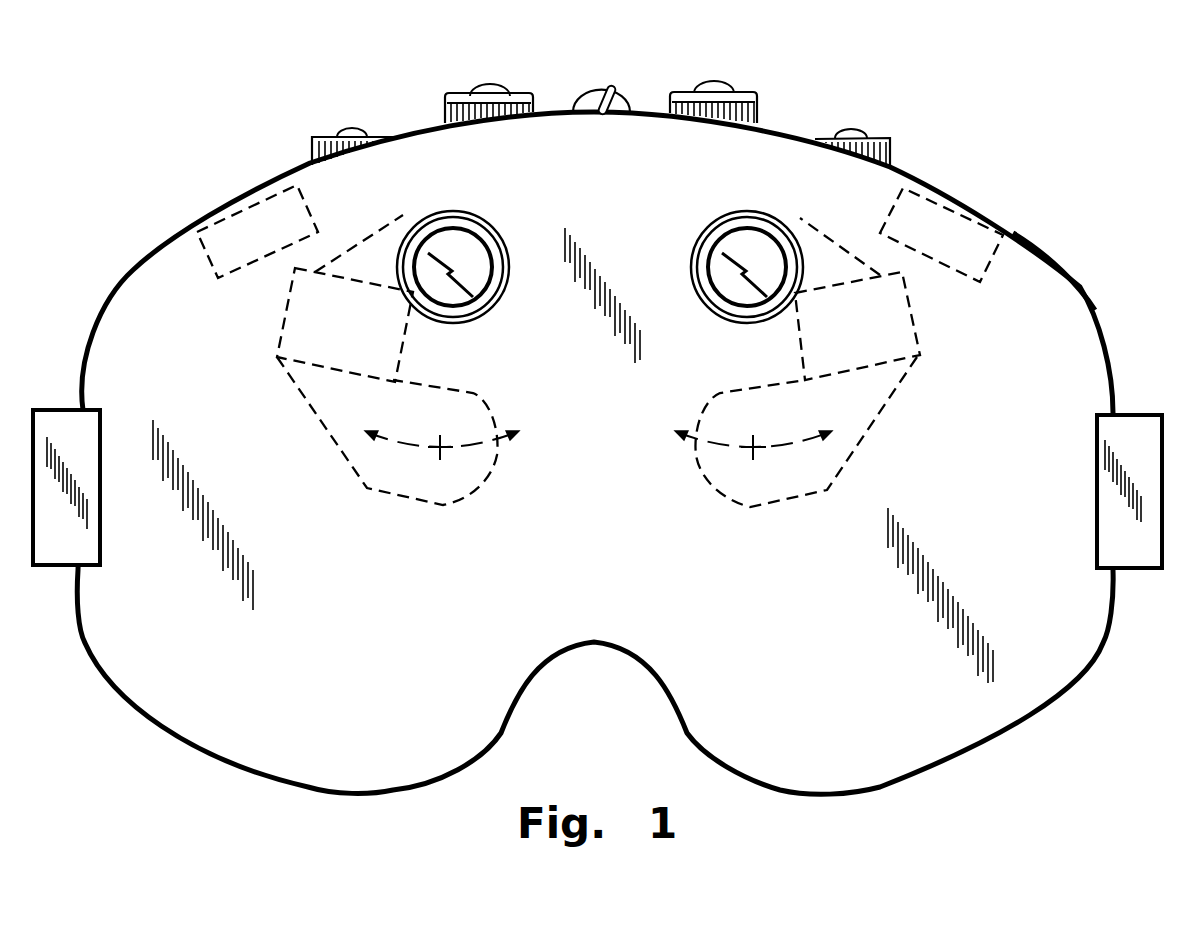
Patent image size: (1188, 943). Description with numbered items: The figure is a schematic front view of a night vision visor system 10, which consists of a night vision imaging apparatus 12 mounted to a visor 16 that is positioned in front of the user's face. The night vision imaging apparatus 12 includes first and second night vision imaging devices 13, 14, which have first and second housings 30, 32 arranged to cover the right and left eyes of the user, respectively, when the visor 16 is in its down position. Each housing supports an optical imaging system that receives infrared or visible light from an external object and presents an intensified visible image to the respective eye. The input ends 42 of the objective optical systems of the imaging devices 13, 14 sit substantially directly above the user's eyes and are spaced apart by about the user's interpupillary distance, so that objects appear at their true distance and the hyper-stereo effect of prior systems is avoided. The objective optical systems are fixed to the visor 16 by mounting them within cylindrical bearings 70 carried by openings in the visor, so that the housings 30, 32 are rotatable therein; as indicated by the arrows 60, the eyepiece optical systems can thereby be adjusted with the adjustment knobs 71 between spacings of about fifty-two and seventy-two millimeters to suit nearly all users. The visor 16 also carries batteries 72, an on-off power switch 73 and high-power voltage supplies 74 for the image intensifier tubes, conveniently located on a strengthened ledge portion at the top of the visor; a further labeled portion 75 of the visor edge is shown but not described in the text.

The night vision visor system 10 is at (597, 412).
The night vision imaging apparatus 12 is at (640, 208).
The first night vision imaging device 13 is at (300, 420).
The second night vision imaging device 14 is at (896, 420).
The visor 16 is at (130, 300).
The first housing 30 is at (283, 310).
The second housing 32 is at (918, 314).
The input ends 42 is at (458, 253).
The arrows 60 is at (482, 447).
The cylindrical bearings 70 is at (505, 290).
The adjustment knobs 71 is at (312, 150).
The batteries 72 is at (445, 112).
The on-off power switch 73 is at (600, 95).
The high-power voltage supplies 74 is at (312, 212).
The frame edge 75 is at (1048, 258).